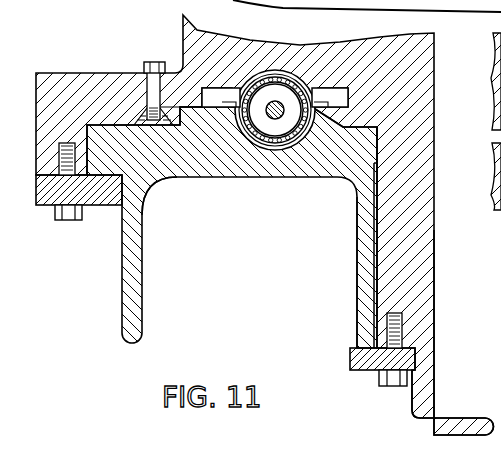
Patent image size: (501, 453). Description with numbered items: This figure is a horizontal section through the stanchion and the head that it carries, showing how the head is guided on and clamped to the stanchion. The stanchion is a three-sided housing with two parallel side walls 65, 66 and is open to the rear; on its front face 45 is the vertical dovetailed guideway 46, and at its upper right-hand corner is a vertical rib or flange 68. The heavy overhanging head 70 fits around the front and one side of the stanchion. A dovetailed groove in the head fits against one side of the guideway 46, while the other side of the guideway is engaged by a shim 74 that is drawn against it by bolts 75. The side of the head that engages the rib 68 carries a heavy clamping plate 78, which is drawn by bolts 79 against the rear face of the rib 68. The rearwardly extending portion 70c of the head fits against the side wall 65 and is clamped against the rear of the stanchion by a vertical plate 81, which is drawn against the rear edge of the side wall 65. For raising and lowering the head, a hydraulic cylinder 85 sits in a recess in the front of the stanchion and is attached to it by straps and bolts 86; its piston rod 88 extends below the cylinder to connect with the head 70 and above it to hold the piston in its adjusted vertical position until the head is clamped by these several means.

The front face 45 is at (281, 150).
The vertical dovetailed guideway 46 is at (332, 117).
The side wall 65 is at (359, 246).
The side wall 66 is at (121, 260).
The vertical rib or flange 68 is at (152, 192).
The head 70 is at (417, 113).
The rearwardly extending portion 70c is at (423, 249).
The shim 74 is at (143, 110).
The bolts 75 is at (153, 63).
The clamping plate 78 is at (96, 208).
The bolts 79 is at (69, 224).
The vertical plate 81 is at (373, 372).
The hydraulic cylinder 85 is at (266, 143).
The straps and bolts 86 is at (218, 102).
The piston rod 88 is at (270, 116).